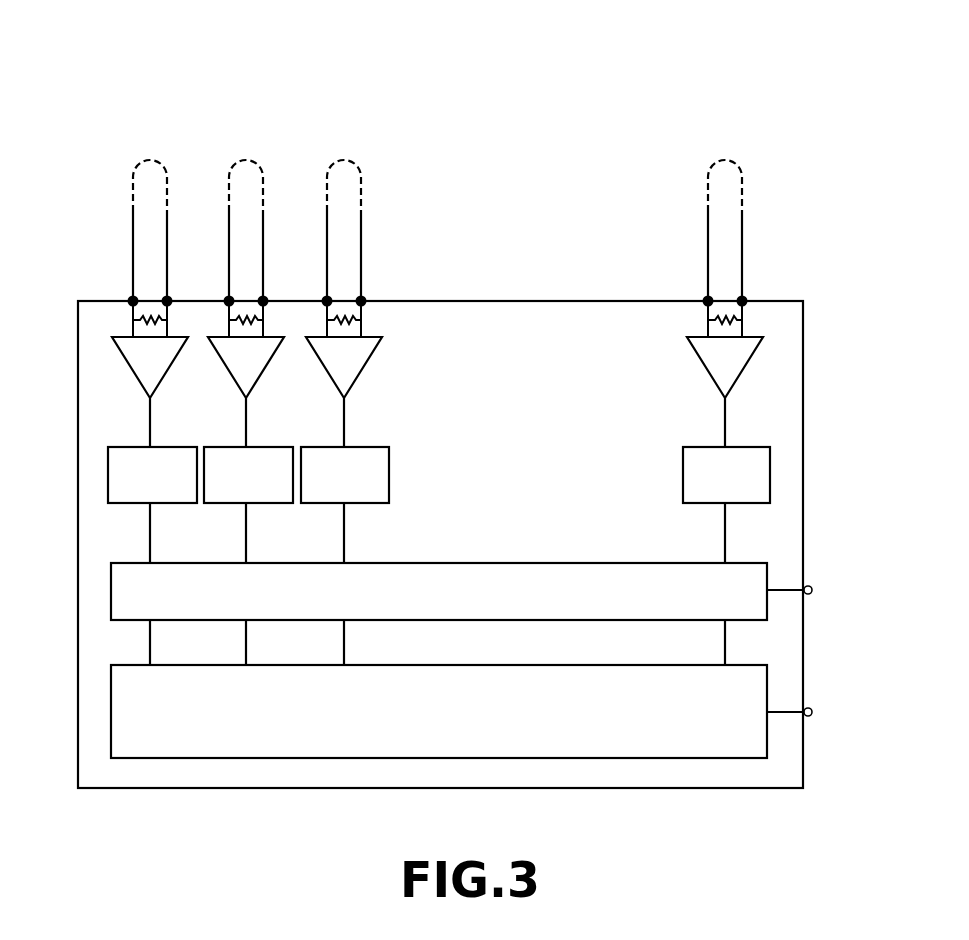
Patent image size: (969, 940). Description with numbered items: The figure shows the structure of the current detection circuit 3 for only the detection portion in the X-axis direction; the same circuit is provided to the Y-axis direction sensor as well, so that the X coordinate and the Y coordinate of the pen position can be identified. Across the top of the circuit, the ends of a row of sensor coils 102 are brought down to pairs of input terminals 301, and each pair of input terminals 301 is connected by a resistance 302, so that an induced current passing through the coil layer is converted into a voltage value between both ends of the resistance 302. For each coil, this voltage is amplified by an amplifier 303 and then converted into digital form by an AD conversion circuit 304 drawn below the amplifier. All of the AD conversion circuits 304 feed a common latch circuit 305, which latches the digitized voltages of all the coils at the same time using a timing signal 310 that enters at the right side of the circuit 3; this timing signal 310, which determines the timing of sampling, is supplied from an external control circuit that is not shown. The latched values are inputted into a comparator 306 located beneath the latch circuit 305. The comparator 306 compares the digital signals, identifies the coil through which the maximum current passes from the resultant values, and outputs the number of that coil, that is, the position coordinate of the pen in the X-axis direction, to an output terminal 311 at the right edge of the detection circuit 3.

The detection circuit 3 is at (57, 328).
The detection coils 102 is at (330, 160).
The input terminals 301 is at (327, 300).
The resistance 302 is at (363, 312).
The amplifier 303 is at (437, 392).
The AD conversion circuit 304 is at (439, 505).
The latch circuit 305 is at (439, 614).
The comparator 306 is at (439, 711).
The timing signal 310 is at (812, 591).
The output terminal 311 is at (812, 713).